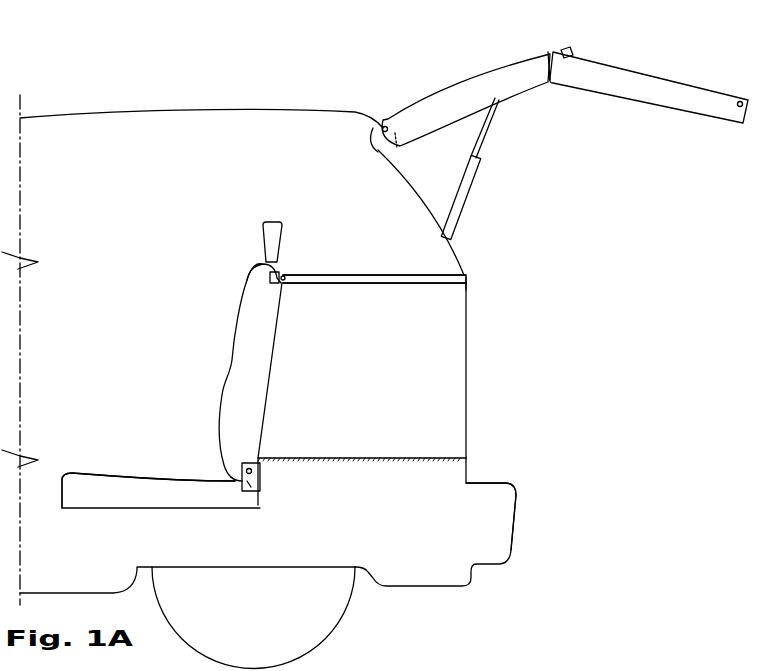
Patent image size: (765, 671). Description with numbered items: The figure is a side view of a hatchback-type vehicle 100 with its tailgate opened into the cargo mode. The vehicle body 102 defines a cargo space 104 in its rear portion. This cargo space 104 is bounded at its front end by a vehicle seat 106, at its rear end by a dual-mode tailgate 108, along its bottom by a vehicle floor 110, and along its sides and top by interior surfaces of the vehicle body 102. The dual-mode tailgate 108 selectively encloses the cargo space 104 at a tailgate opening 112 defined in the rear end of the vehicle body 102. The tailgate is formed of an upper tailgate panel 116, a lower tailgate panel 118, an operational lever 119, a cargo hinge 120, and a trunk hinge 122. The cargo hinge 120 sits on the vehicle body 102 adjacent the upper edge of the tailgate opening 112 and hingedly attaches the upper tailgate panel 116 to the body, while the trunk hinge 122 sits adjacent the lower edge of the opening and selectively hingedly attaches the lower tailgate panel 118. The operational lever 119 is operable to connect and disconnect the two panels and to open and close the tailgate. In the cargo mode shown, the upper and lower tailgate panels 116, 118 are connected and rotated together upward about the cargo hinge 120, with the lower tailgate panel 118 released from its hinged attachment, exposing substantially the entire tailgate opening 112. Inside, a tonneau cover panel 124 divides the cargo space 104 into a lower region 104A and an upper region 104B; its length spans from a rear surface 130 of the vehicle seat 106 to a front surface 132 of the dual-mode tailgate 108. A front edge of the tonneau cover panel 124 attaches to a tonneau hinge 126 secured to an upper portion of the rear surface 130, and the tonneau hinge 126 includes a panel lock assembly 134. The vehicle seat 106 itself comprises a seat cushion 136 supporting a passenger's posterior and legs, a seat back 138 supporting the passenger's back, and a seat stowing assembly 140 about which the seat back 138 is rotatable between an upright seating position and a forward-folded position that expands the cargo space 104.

The vehicle 100 is at (75, 80).
The vehicle body 102 is at (313, 127).
The cargo space 104 is at (412, 387).
The lower region 104A is at (404, 370).
The upper region 104B is at (391, 204).
The vehicle seat 106 is at (187, 277).
The dual-mode tailgate 108 is at (422, 37).
The vehicle floor 110 is at (383, 459).
The tailgate opening 112 is at (514, 268).
The upper tailgate panel 116 is at (505, 80).
The lower tailgate panel 118 is at (627, 84).
The operational lever 119 is at (565, 47).
The cargo hinge 120 is at (383, 126).
The trunk hinge 122 is at (477, 486).
The tonneau cover panel 124 is at (338, 283).
The tonneau hinge 126 is at (283, 274).
The rear surface 130 is at (262, 419).
The front surface 132 is at (528, 112).
The panel lock assembly 134 is at (256, 278).
The seat cushion 136 is at (117, 498).
The seat back 138 is at (233, 362).
The seat stowing assembly 140 is at (262, 486).